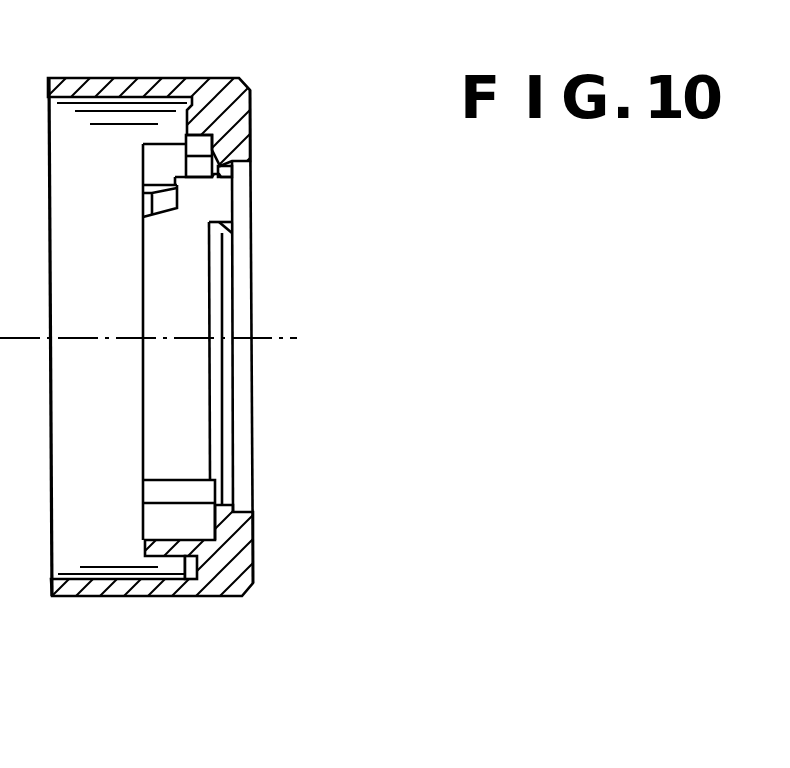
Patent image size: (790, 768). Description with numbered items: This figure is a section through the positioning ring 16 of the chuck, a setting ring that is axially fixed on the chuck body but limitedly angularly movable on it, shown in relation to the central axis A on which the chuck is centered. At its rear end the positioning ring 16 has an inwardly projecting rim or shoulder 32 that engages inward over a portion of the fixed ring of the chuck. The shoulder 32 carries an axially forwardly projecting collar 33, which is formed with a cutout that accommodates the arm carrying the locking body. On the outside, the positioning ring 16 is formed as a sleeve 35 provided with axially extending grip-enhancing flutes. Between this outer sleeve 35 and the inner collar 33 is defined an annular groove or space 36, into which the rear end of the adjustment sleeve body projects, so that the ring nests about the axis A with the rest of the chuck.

The positioning ring 16 is at (255, 560).
The shoulder 32 is at (228, 122).
The collar 33 is at (187, 543).
The sleeve 35 is at (110, 80).
The annular groove 36 is at (152, 120).
The axis A is at (267, 337).